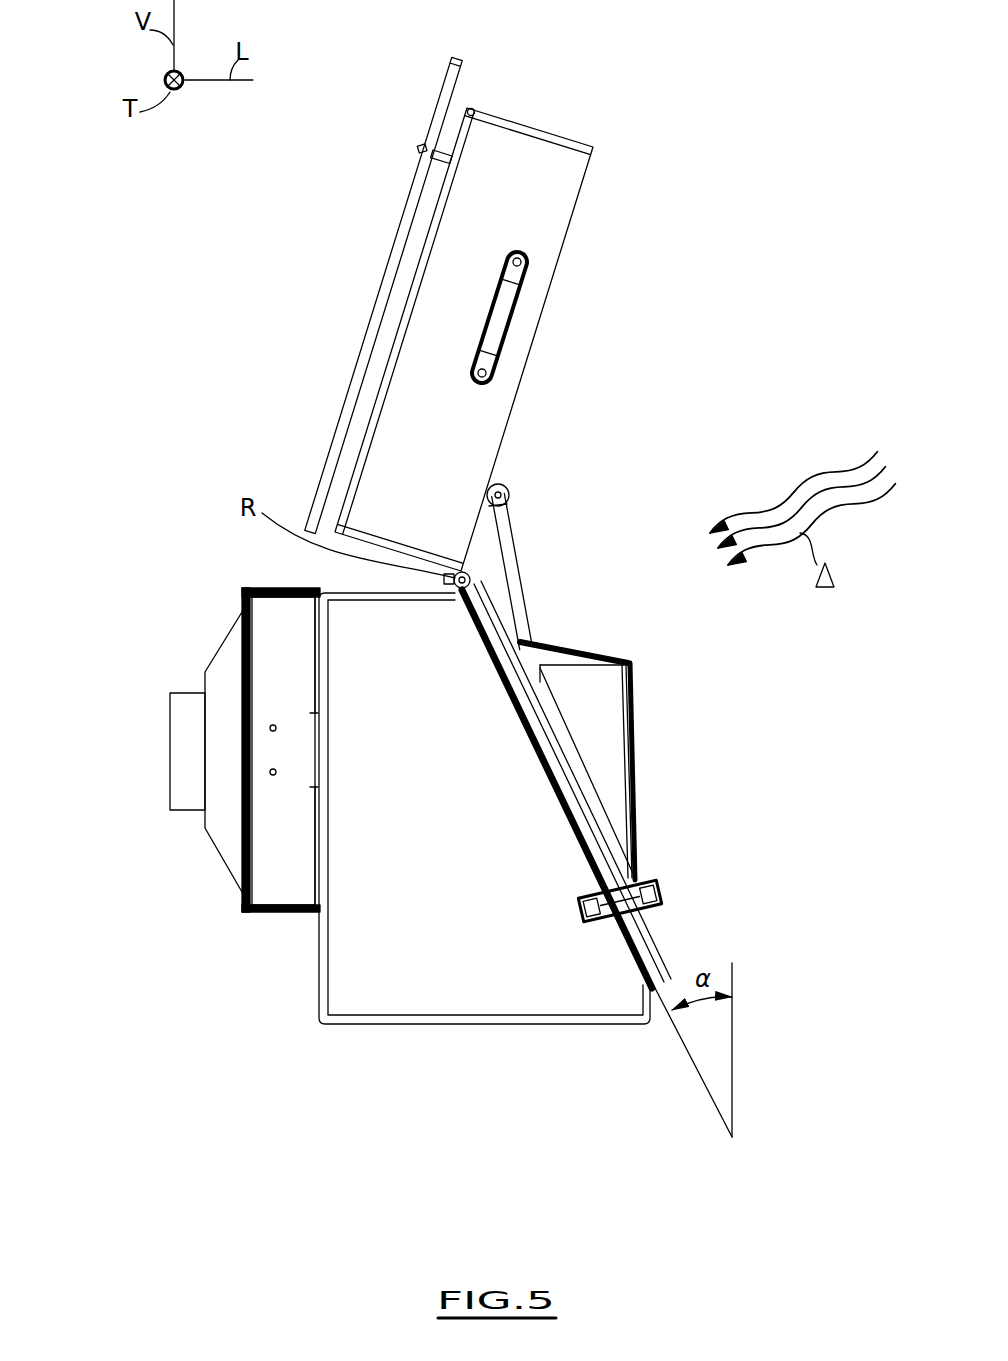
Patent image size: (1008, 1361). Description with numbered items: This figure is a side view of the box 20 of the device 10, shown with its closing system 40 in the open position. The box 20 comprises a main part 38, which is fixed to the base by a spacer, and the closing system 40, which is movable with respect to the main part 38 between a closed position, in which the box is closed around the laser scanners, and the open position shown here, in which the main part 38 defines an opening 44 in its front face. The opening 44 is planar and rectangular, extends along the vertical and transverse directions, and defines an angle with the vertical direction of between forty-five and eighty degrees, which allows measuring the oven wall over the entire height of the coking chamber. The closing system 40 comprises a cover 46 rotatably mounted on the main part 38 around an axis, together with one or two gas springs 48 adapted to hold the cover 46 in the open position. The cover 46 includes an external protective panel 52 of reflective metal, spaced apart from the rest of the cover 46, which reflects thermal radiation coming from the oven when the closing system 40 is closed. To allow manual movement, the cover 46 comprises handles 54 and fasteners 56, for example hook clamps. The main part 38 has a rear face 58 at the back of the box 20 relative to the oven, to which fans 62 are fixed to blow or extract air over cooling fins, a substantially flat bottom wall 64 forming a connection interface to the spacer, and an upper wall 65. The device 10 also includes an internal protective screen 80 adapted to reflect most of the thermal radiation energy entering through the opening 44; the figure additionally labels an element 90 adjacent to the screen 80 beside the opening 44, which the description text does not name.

The device 10 is at (205, 503).
The box 20 is at (100, 716).
The main part 38 is at (400, 880).
The closing system 40 is at (505, 173).
The opening 44 is at (662, 700).
The cover 46 is at (543, 198).
The gas spring 48 is at (513, 542).
The external protective panel 52 is at (366, 295).
The handle 54 is at (497, 318).
The fastener 56 is at (632, 891).
The rear face 58 is at (216, 878).
The fan 62 is at (228, 670).
The bottom wall 64 is at (350, 1020).
The upper wall 65 is at (333, 590).
The internal protective screen 80 is at (640, 687).
The bracket plate 90 is at (585, 737).